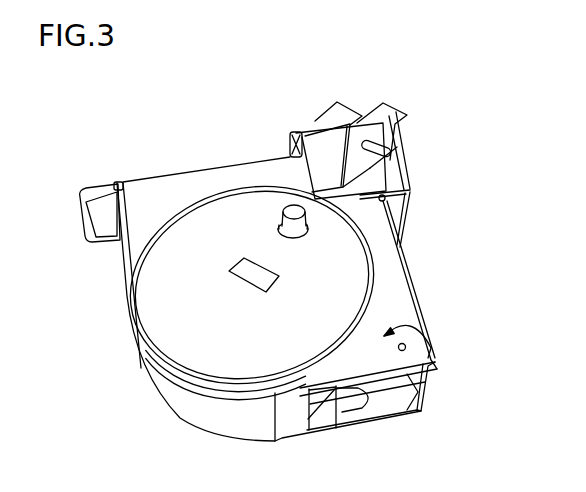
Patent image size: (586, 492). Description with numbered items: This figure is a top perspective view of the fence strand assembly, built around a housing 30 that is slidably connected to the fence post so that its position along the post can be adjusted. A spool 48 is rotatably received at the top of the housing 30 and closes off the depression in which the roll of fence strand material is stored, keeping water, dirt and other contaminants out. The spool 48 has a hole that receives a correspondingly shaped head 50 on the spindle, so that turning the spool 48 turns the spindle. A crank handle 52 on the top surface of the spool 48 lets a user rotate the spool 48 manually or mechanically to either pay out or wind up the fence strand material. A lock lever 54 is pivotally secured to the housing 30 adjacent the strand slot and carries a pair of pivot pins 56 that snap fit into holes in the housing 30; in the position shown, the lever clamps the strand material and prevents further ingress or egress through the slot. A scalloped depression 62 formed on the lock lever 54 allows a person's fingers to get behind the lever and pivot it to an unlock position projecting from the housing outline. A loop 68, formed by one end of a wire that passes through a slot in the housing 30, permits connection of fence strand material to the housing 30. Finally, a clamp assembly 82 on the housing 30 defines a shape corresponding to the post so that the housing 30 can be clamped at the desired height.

The housing 30 is at (177, 400).
The spool 48 is at (222, 213).
The head 50 is at (243, 276).
The crank handle 52 is at (283, 209).
The lock lever 54 is at (380, 406).
The pivot pins 56 is at (405, 346).
The scalloped depression 62 is at (345, 409).
The loop 68 is at (80, 218).
The clamp assembly 82 is at (430, 185).